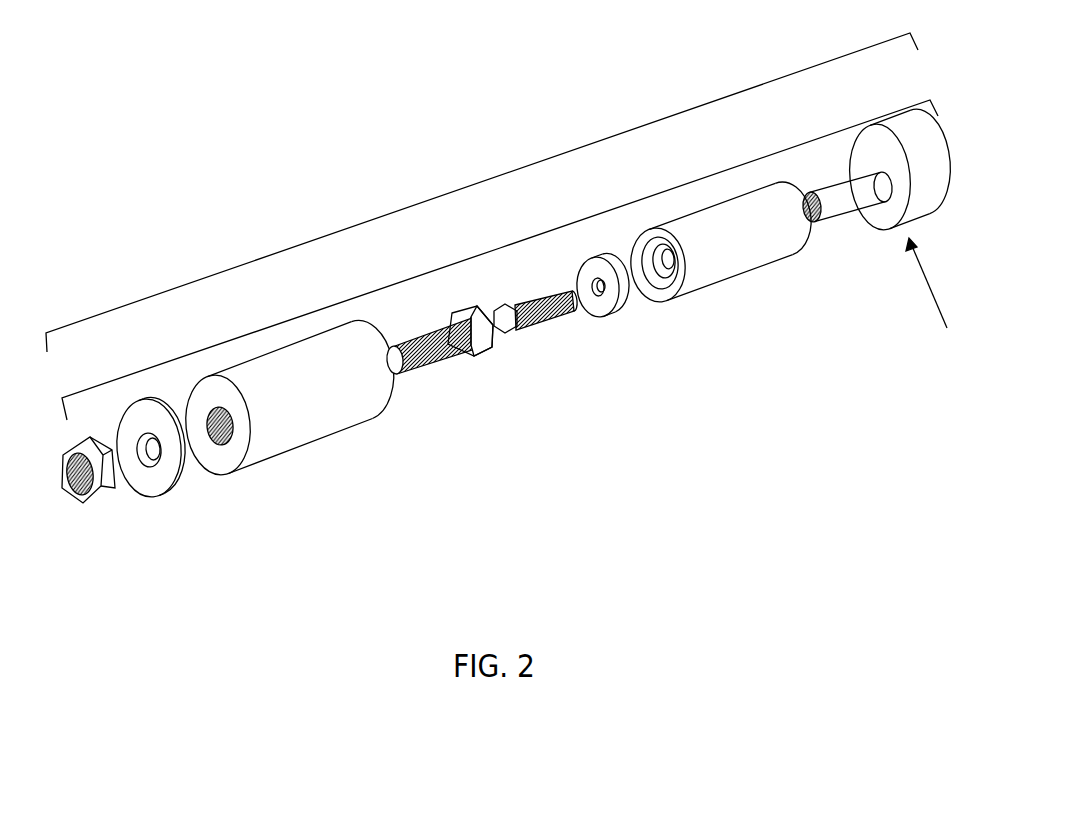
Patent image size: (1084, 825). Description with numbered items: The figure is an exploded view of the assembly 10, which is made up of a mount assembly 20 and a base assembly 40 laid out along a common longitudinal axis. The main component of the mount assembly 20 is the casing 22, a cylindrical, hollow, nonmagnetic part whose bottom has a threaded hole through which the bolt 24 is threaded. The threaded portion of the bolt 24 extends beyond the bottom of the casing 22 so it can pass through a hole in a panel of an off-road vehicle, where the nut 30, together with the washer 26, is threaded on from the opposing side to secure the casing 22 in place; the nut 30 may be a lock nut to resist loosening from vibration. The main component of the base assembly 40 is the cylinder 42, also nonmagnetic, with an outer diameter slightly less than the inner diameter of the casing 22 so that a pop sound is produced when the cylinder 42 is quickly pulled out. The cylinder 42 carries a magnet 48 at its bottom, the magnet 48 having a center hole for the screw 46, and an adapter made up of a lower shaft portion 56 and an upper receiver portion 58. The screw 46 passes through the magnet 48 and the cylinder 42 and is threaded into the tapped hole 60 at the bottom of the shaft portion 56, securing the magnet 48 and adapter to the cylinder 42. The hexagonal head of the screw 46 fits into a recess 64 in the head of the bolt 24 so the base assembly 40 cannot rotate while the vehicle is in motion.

The assembly 10 is at (480, 183).
The mount assembly 20 is at (262, 328).
The casing 22 is at (302, 415).
The bolt 24 is at (440, 363).
The washer 26 is at (178, 487).
The nut 30 is at (107, 510).
The base assembly 40 is at (703, 177).
The cylinder 42 is at (720, 255).
The screw 46 is at (535, 313).
The magnet 48 is at (618, 310).
The shaft portion 56 is at (862, 205).
The receiver portion 58 is at (937, 185).
The tapped hole 60 is at (815, 221).
The recess 64 is at (929, 294).